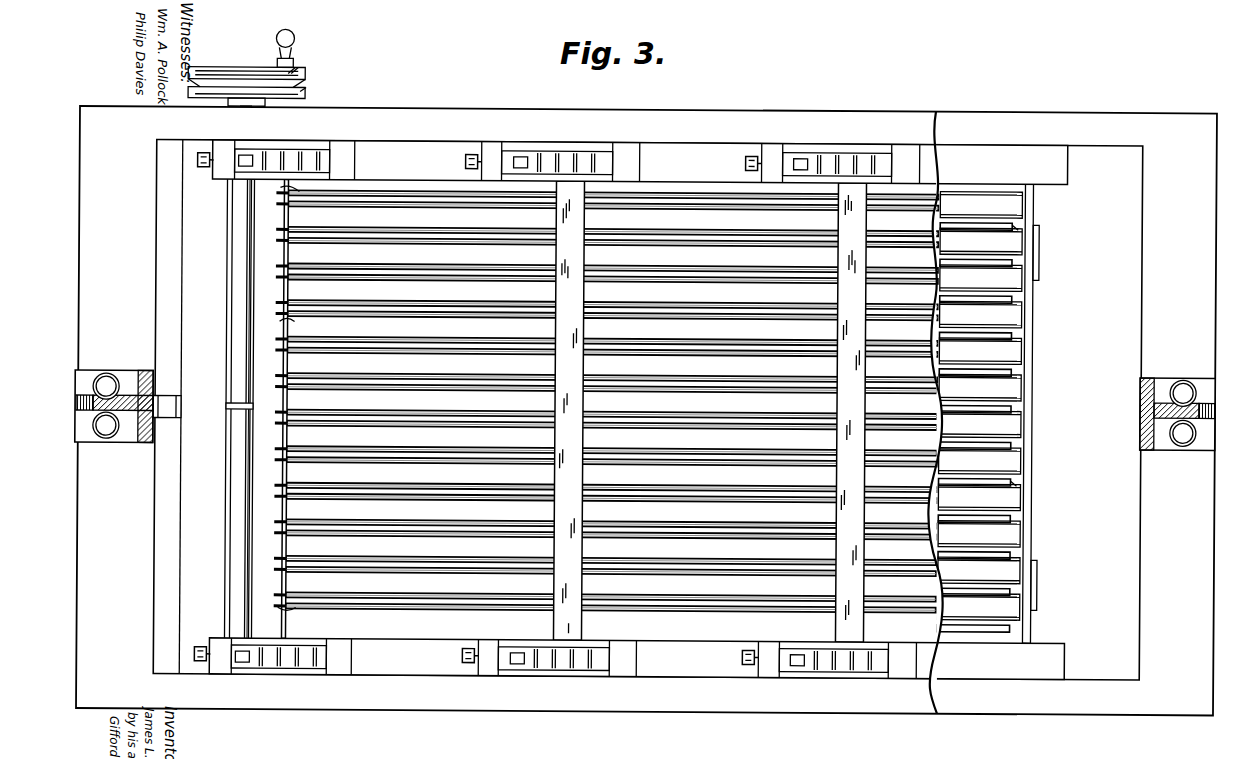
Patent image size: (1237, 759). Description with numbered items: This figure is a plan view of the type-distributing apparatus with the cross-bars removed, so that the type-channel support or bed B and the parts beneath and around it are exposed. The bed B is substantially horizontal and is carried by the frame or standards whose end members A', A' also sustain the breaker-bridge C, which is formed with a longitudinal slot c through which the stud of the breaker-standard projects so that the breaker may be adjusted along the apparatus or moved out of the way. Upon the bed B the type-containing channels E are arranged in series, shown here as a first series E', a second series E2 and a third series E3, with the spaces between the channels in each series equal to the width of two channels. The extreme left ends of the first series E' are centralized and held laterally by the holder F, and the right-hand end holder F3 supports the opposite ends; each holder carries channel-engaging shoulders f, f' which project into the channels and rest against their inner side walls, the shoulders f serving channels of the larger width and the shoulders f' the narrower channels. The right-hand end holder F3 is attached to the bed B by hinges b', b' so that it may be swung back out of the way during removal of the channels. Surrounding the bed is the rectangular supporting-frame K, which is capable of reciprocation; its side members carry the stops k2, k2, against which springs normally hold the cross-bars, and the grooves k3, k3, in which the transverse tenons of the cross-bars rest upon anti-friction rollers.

The end member A' is at (646, 411).
The type-channel support or bed B is at (633, 401).
The breaker-bridge C is at (114, 406).
The longitudinal slot c is at (1177, 414).
The type-containing channel E is at (632, 405).
The first series of channels E' is at (539, 410).
The second series of channels E2 is at (777, 412).
The third series of channels E3 is at (995, 412).
The holder F is at (254, 422).
The channel-engaging shoulder f is at (636, 411).
The channel-engaging shoulder f' is at (648, 408).
The right-hand end holder F3 is at (1040, 495).
The rectangular supporting-frame K is at (186, 405).
The stop k2 is at (469, 412).
The groove k3 is at (825, 656).
The hinge b' is at (1043, 417).